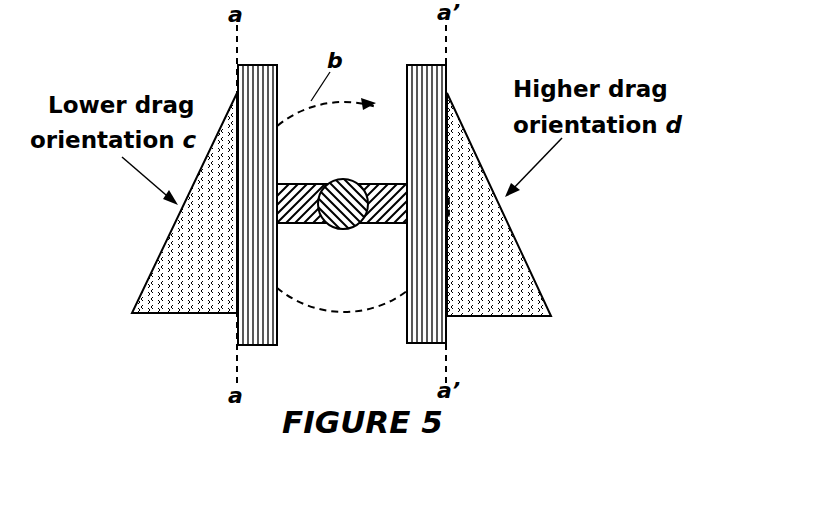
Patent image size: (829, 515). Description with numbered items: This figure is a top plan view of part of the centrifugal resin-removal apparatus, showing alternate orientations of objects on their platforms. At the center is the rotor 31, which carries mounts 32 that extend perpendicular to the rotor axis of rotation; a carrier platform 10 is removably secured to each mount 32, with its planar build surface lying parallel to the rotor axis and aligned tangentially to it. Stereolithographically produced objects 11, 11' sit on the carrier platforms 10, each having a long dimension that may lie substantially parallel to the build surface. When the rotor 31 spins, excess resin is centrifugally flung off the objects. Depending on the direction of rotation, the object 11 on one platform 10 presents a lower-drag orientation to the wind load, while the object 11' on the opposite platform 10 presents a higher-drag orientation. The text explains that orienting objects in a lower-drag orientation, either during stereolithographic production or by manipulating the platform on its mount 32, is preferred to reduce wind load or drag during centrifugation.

The carrier platform 10 is at (342, 205).
The object 11 is at (184, 203).
The object 11' is at (499, 204).
The rotor 31 is at (333, 225).
The mount 32 is at (377, 183).